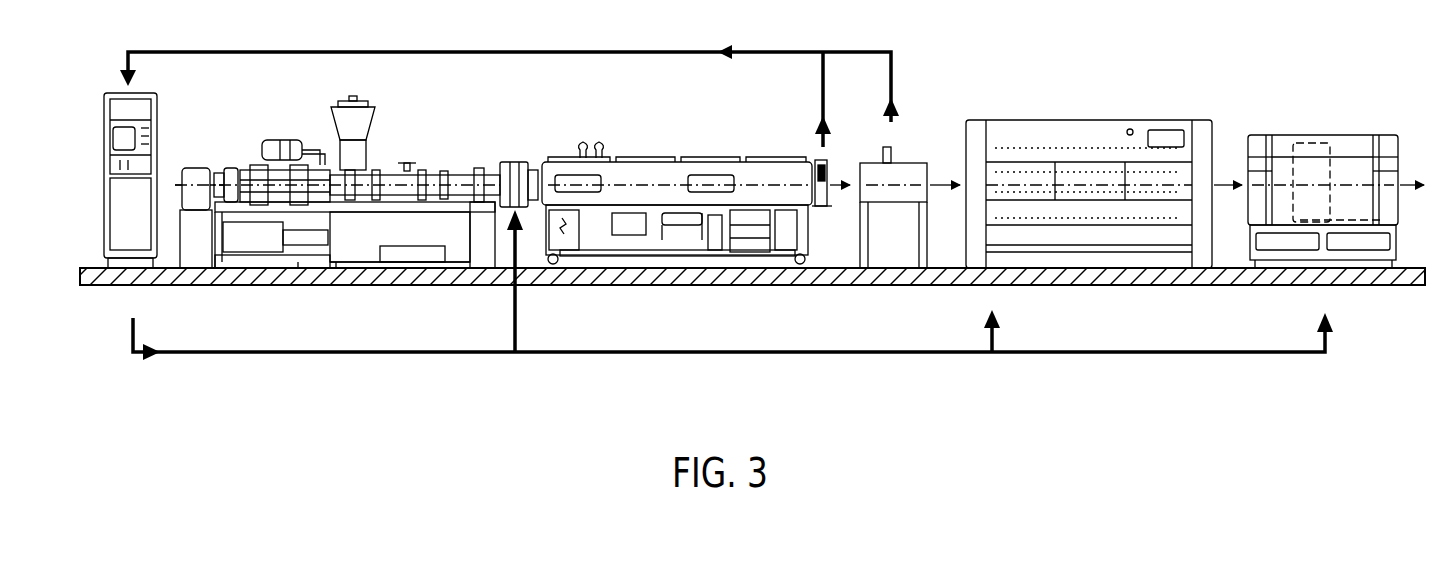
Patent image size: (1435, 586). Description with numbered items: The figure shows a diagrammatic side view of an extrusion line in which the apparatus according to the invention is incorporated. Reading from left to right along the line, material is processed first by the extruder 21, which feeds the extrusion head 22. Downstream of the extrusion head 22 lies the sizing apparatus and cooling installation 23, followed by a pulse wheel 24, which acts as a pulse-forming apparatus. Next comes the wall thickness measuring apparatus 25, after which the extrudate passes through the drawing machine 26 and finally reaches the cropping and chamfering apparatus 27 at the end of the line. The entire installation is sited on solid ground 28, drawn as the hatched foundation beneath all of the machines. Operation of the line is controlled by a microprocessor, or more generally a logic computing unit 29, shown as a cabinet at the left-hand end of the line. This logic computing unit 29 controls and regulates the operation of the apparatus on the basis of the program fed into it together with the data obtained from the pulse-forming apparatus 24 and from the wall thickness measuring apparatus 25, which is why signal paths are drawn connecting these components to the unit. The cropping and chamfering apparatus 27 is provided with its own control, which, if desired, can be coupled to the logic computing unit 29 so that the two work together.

The extruder 21 is at (352, 228).
The extrusion head 22 is at (502, 167).
The sizing apparatus and cooling installation 23 is at (655, 175).
The pulse wheel 24 is at (814, 162).
The wall thickness measuring apparatus 25 is at (907, 168).
The drawing machine 26 is at (1097, 243).
The cropping and chamfering apparatus 27 is at (1385, 147).
The solid ground 28 is at (1363, 284).
The logic computing unit 29 is at (122, 208).